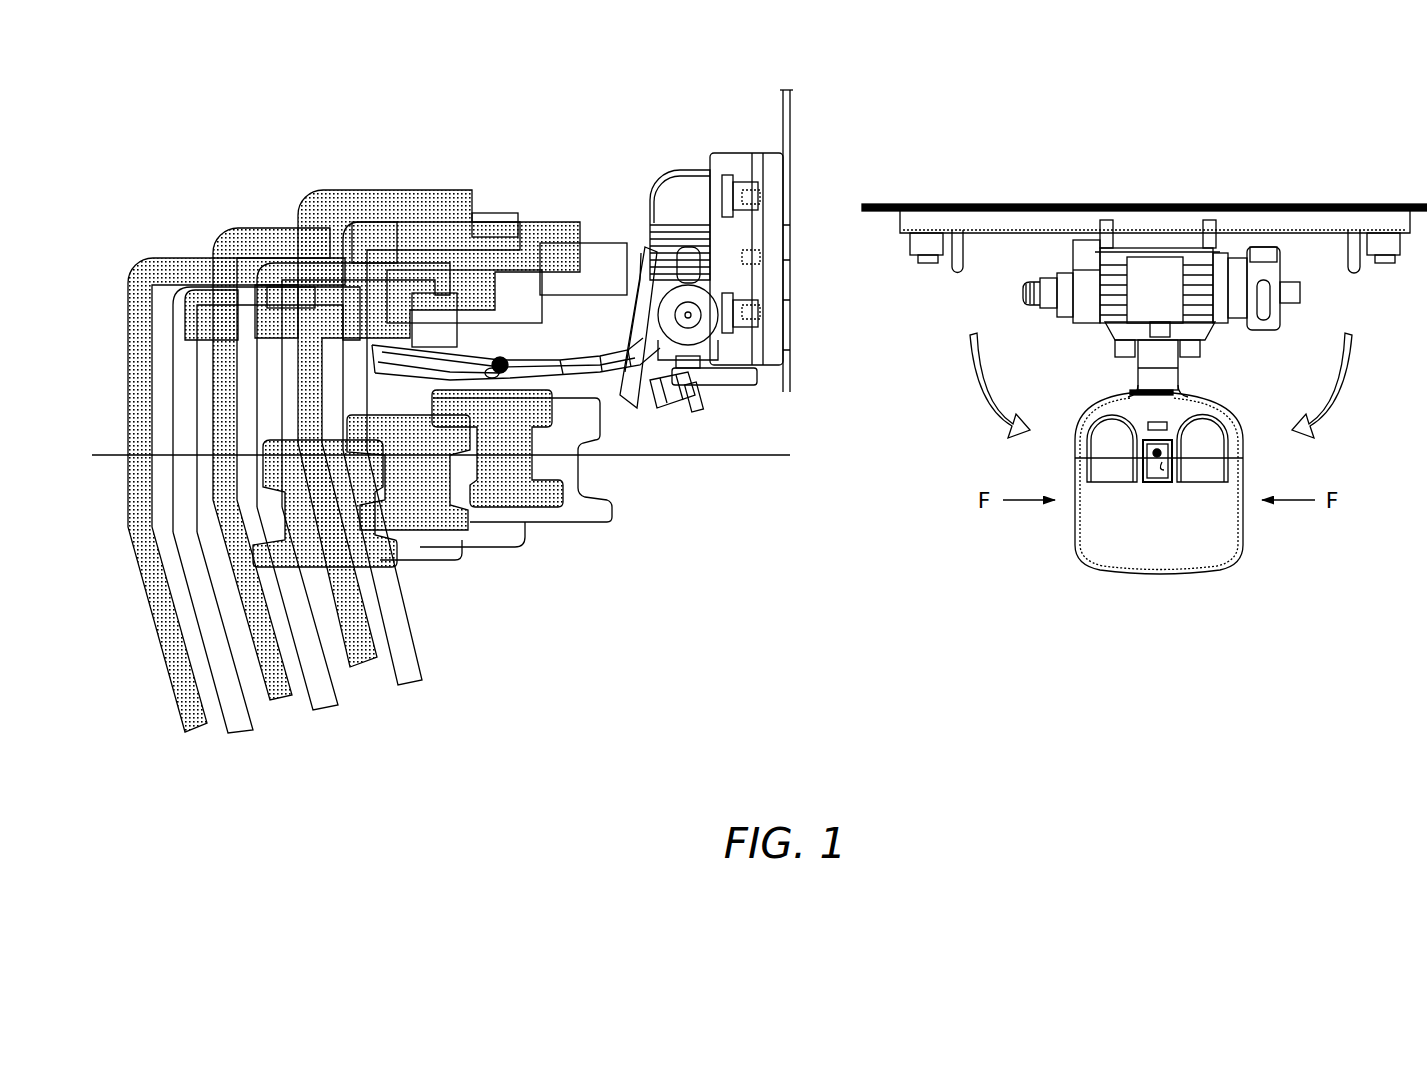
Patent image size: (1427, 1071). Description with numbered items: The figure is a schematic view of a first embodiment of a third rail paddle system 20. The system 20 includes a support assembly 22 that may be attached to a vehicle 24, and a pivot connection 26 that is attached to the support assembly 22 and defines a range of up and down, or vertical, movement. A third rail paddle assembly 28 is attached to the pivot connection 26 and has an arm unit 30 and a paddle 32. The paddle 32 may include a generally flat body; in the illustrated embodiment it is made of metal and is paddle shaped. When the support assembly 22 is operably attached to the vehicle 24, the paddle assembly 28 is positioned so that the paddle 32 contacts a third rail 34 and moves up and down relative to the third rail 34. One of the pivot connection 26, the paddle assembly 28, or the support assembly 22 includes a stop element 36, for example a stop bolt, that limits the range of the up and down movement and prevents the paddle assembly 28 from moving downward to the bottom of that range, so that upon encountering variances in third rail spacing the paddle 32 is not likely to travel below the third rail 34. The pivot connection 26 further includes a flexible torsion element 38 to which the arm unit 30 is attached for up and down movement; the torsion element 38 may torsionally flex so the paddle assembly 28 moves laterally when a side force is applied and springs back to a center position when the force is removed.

The system 20 is at (672, 498).
The support assembly 22 is at (766, 388).
The vehicle 24 is at (790, 260).
The pivot connection 26 is at (710, 395).
The third rail paddle assembly 28 is at (608, 425).
The arm unit 30 is at (618, 340).
The paddle 32 is at (492, 348).
The third rail 34 is at (452, 570).
The stop element 36 is at (680, 425).
The flexible torsion element 38 is at (1100, 322).